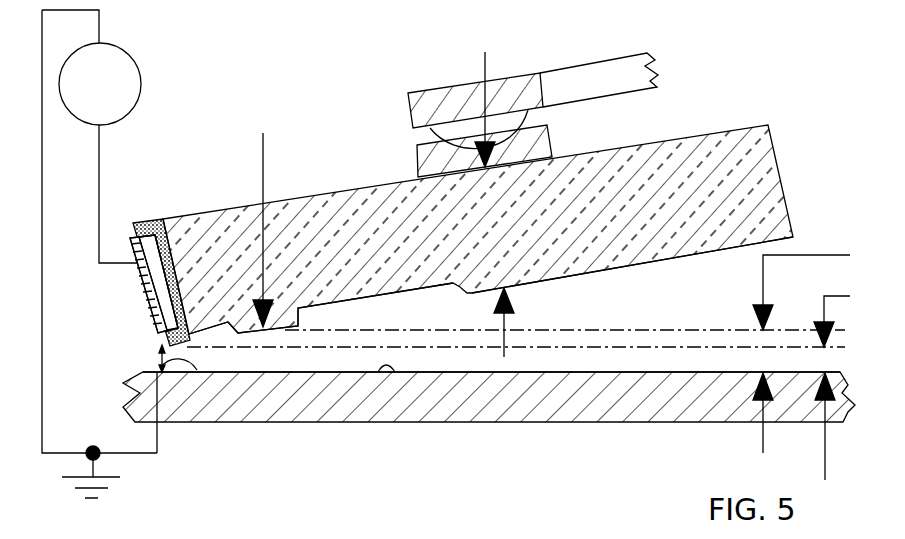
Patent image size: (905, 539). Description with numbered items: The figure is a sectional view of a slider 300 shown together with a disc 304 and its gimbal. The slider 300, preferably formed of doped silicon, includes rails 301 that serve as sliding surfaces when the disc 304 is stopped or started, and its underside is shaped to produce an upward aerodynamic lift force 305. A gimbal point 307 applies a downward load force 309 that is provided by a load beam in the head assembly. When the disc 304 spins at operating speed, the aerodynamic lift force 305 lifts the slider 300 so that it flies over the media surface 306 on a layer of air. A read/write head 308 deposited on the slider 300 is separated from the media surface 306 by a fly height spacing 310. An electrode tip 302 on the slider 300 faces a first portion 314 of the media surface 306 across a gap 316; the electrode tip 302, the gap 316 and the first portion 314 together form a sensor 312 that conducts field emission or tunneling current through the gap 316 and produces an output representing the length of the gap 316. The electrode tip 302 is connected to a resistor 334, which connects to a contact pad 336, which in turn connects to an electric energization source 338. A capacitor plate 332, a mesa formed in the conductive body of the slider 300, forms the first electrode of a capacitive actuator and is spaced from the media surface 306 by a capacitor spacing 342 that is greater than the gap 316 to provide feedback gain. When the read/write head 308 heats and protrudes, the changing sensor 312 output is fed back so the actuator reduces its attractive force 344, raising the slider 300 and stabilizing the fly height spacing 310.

The slider 300 is at (693, 137).
The rails 301 is at (600, 272).
The electrode tip 302 is at (158, 342).
The disc 304 is at (440, 402).
The aerodynamic lift force 305 is at (510, 306).
The media surface 306 is at (378, 372).
The gimbal point 307 is at (445, 140).
The read/write head 308 is at (160, 346).
The downward load force 309 is at (482, 68).
The fly height spacing 310 is at (197, 370).
The sensor 312 is at (118, 329).
The first portion of the media surface 314 is at (147, 372).
The gap 316 is at (853, 315).
The capacitor plate 332 is at (287, 325).
The resistor 334 is at (186, 265).
The contact pad 336 is at (136, 280).
The electric energization source 338 is at (141, 80).
The capacitor spacing 342 is at (823, 285).
The attractive force 344 is at (263, 192).